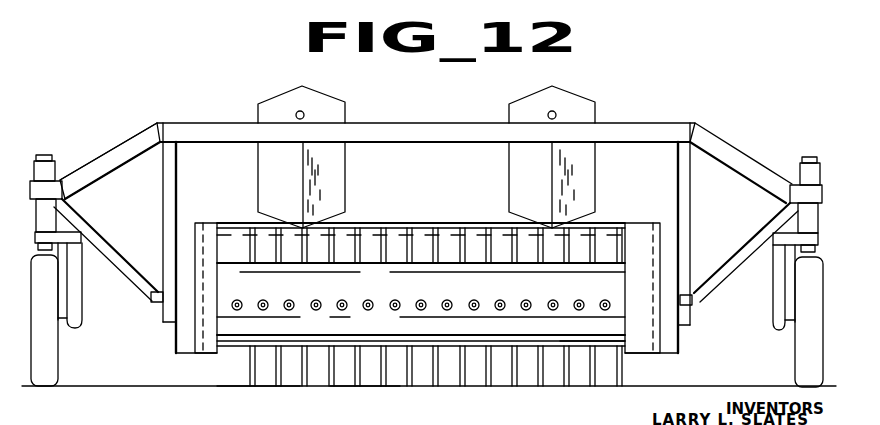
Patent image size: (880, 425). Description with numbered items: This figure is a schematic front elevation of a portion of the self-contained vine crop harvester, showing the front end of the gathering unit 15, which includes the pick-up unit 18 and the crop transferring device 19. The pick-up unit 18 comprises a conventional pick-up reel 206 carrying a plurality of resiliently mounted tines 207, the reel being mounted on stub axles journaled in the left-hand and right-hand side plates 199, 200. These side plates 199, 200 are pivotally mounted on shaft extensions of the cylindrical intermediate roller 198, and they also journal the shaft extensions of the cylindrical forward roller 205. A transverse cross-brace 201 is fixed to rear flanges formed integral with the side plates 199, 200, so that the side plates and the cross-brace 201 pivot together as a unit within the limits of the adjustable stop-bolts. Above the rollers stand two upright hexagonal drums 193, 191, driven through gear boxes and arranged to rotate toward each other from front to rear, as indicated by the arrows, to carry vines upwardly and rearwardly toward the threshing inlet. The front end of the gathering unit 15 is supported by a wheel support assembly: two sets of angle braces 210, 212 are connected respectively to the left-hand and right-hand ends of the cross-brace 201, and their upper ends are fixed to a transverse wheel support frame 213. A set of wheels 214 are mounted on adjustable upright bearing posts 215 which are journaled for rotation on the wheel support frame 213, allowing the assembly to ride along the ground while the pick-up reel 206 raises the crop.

The transverse wheel support frame 213 is at (416, 124).
The adjustable upright bearing posts 215 is at (75, 136).
The upright hexagonal drum 193 is at (270, 163).
The upright hexagonal drum 191 is at (583, 168).
The right-hand side plate 200 is at (204, 232).
The left-hand side plate 199 is at (652, 242).
The crop transferring device 19 is at (427, 224).
The cylindrical intermediate roller 198 is at (426, 247).
The cylindrical forward roller 205 is at (470, 242).
The angle braces 210 is at (165, 190).
The angle braces 212 is at (747, 240).
The transverse cross-brace 201 is at (152, 298).
The wheels 214 is at (50, 349).
The resiliently mounted tines 207 is at (250, 374).
The pick-up reel 206 is at (615, 328).
The gathering unit 15 is at (276, 393).
The pick-up unit 18 is at (379, 389).